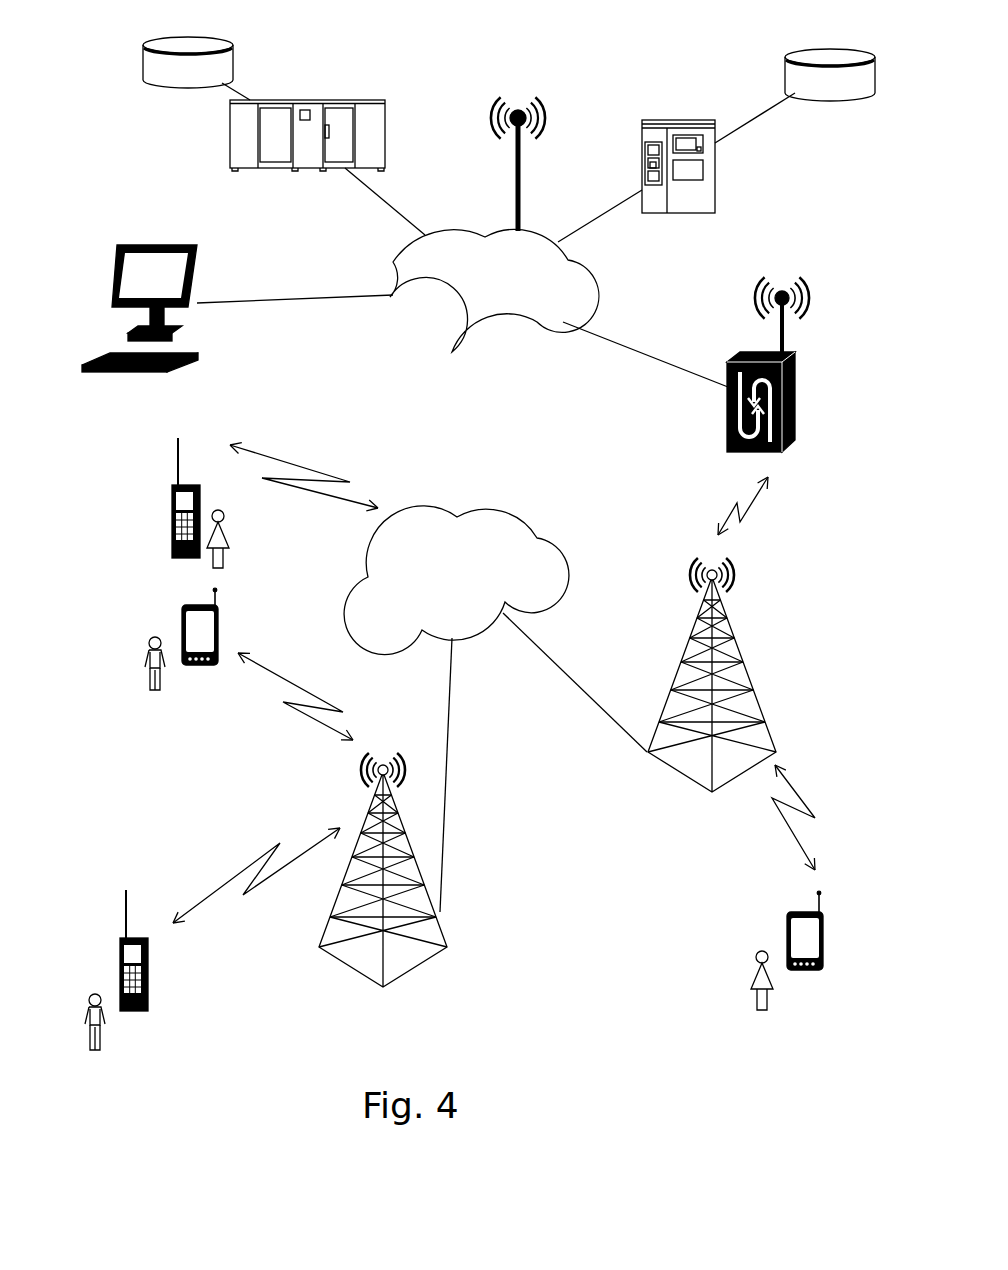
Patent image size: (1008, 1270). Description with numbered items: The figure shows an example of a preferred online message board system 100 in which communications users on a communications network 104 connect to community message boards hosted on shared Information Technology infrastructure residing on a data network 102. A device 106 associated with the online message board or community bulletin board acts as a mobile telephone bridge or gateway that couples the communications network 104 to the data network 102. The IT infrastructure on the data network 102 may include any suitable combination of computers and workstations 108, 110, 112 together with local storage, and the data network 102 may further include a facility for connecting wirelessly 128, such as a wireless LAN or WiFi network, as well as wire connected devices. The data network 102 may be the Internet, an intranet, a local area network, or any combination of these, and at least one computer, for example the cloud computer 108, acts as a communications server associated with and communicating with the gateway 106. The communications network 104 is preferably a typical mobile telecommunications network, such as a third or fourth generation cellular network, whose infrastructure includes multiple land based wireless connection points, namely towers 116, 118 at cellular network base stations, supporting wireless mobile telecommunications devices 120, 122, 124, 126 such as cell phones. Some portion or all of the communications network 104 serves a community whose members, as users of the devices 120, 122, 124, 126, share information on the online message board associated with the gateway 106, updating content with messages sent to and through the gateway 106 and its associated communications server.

The online message board system 100 is at (705, 995).
The data network 102 is at (393, 262).
The communications network 104 is at (483, 511).
The device 106 is at (727, 403).
The computer 108 is at (386, 105).
The computer 110 is at (678, 118).
The workstation 112 is at (108, 243).
The land based wireless connection point 116 is at (678, 668).
The land based wireless connection point 118 is at (322, 947).
The wireless mobile telecommunications device 120 is at (182, 640).
The wireless mobile telecommunications device 122 is at (787, 945).
The wireless mobile telecommunications device 124 is at (120, 965).
The wireless mobile telecommunications device 126 is at (172, 500).
The facility for connecting wirelessly 128 is at (516, 198).